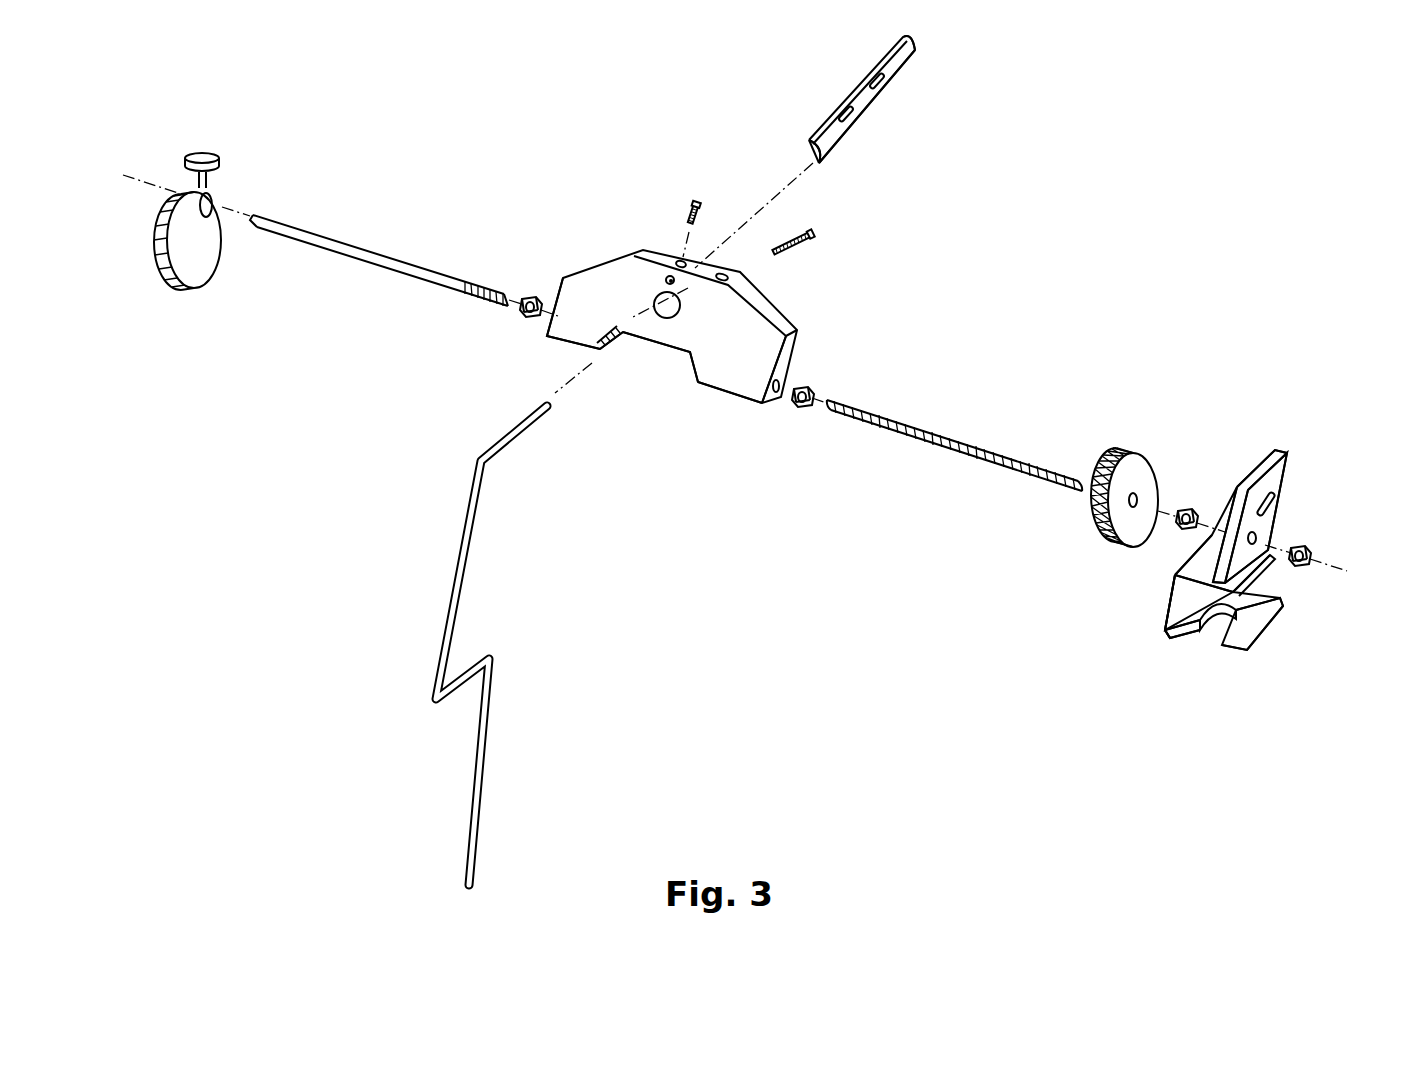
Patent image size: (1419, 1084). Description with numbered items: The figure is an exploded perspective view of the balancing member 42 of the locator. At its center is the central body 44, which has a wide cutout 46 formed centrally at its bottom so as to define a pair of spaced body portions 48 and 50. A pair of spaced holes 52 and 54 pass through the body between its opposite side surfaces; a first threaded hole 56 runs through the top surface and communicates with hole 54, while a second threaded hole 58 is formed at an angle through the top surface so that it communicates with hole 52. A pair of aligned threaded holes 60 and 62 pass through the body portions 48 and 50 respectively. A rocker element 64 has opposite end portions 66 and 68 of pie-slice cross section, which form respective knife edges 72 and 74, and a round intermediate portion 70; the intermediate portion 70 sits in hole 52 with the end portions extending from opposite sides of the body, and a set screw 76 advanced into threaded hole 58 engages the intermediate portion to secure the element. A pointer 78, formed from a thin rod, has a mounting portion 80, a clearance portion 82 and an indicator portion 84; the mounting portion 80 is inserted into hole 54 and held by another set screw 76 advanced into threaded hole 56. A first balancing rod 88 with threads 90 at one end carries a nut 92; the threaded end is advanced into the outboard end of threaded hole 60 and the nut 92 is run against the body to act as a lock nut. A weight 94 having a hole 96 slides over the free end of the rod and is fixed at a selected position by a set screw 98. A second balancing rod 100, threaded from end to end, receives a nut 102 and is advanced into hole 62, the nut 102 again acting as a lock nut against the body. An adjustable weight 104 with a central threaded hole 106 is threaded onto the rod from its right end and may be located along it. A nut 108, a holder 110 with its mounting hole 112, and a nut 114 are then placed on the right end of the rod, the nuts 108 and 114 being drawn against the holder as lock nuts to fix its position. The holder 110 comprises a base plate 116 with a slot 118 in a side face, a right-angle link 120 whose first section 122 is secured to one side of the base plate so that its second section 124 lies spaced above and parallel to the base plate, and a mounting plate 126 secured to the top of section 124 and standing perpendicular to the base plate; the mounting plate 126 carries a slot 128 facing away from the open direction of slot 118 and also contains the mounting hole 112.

The balancing member 42 is at (566, 140).
The central body 44 is at (738, 406).
The wide cutout 46 is at (690, 374).
The body portion 48 is at (566, 334).
The body portion 50 is at (732, 365).
The hole 52 is at (647, 300).
The hole 54 is at (668, 277).
The first threaded hole 56 is at (678, 262).
The second threaded hole 58 is at (732, 275).
The threaded hole 60 is at (623, 338).
The threaded hole 62 is at (775, 388).
The rocker element 64 is at (836, 95).
The end portion 66 is at (820, 121).
The end portion 68 is at (905, 40).
The intermediate portion 70 is at (873, 110).
The knife edge 72 is at (816, 164).
The knife edge 74 is at (904, 68).
The set screw 76 is at (694, 199).
The pointer 78 is at (455, 512).
The mounting portion 80 is at (517, 444).
The clearance portion 82 is at (470, 560).
The indicator portion 84 is at (487, 746).
The first balancing rod 88 is at (353, 242).
The threads 90 is at (462, 292).
The nut 92 is at (531, 318).
The weight 94 is at (198, 278).
The hole 96 is at (212, 203).
The set screw 98 is at (196, 152).
The second balancing rod 100 is at (953, 435).
The nut 102 is at (810, 386).
The adjustable weight 104 is at (1097, 494).
The central threaded hole 106 is at (1140, 503).
The nut 108 is at (1190, 507).
The holder 110 is at (1300, 400).
The mounting hole 112 is at (1256, 538).
The nut 114 is at (1312, 550).
The base plate 116 is at (1272, 616).
The slot 118 is at (1217, 624).
The right-angle link 120 is at (1162, 602).
The first section 122 is at (1162, 616).
The second section 124 is at (1198, 564).
The mounting plate 126 is at (1271, 457).
The slot 128 is at (1268, 500).